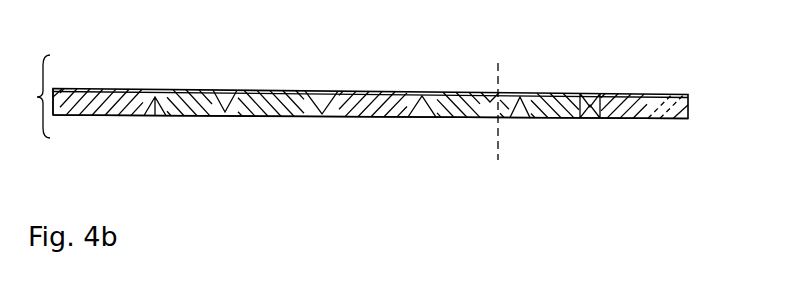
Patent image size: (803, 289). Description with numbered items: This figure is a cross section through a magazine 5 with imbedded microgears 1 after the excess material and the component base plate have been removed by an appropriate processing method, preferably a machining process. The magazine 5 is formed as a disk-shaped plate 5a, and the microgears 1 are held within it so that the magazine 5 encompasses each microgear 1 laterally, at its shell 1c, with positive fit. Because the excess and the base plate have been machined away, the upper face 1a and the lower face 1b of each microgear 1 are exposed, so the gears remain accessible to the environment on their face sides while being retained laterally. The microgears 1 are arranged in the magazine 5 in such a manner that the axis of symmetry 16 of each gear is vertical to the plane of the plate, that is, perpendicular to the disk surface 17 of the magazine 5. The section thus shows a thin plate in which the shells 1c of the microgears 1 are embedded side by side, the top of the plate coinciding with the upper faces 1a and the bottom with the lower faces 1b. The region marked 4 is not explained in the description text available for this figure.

The microgear 1 is at (293, 114).
The upper face 1a is at (175, 87).
The lower face 1b is at (187, 118).
The shell 1c is at (143, 118).
The conductor region 4 is at (647, 94).
The magazine 5 is at (32, 96).
The disk-shaped plate 5a is at (689, 102).
The axis of symmetry 16 is at (498, 128).
The disk surface 17 is at (72, 87).